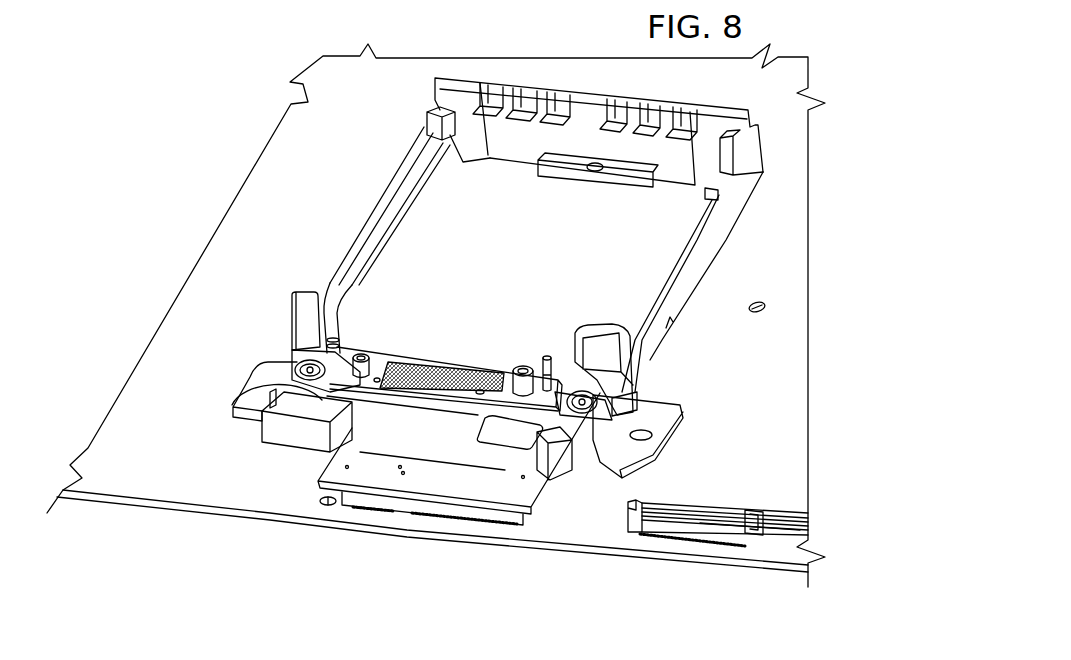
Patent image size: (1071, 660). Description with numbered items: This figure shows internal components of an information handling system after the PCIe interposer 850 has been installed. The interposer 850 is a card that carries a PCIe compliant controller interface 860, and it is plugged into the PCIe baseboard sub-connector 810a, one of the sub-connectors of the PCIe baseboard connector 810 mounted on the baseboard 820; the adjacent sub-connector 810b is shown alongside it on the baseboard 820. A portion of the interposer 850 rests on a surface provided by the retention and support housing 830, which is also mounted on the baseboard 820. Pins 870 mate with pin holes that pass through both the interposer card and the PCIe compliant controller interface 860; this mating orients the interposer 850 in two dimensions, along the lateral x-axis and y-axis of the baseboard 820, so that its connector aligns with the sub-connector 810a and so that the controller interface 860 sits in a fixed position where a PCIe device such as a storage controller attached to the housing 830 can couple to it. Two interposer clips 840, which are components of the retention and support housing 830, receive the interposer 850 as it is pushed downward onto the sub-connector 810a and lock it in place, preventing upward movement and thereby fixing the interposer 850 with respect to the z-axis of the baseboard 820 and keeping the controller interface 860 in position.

The PCIe baseboard sub-connector 810 is at (474, 521).
The PCIe baseboard sub-connector 810a is at (427, 507).
The x8 PCIe baseboard connector (second) 810b is at (775, 538).
The baseboard 820 is at (229, 257).
The retention and support housing 830 is at (357, 250).
The interposer clips 840 is at (262, 390).
The PCIe interposer 850 is at (318, 470).
The PCIe compliant controller interface 860 is at (480, 376).
The pins 870 is at (602, 294).